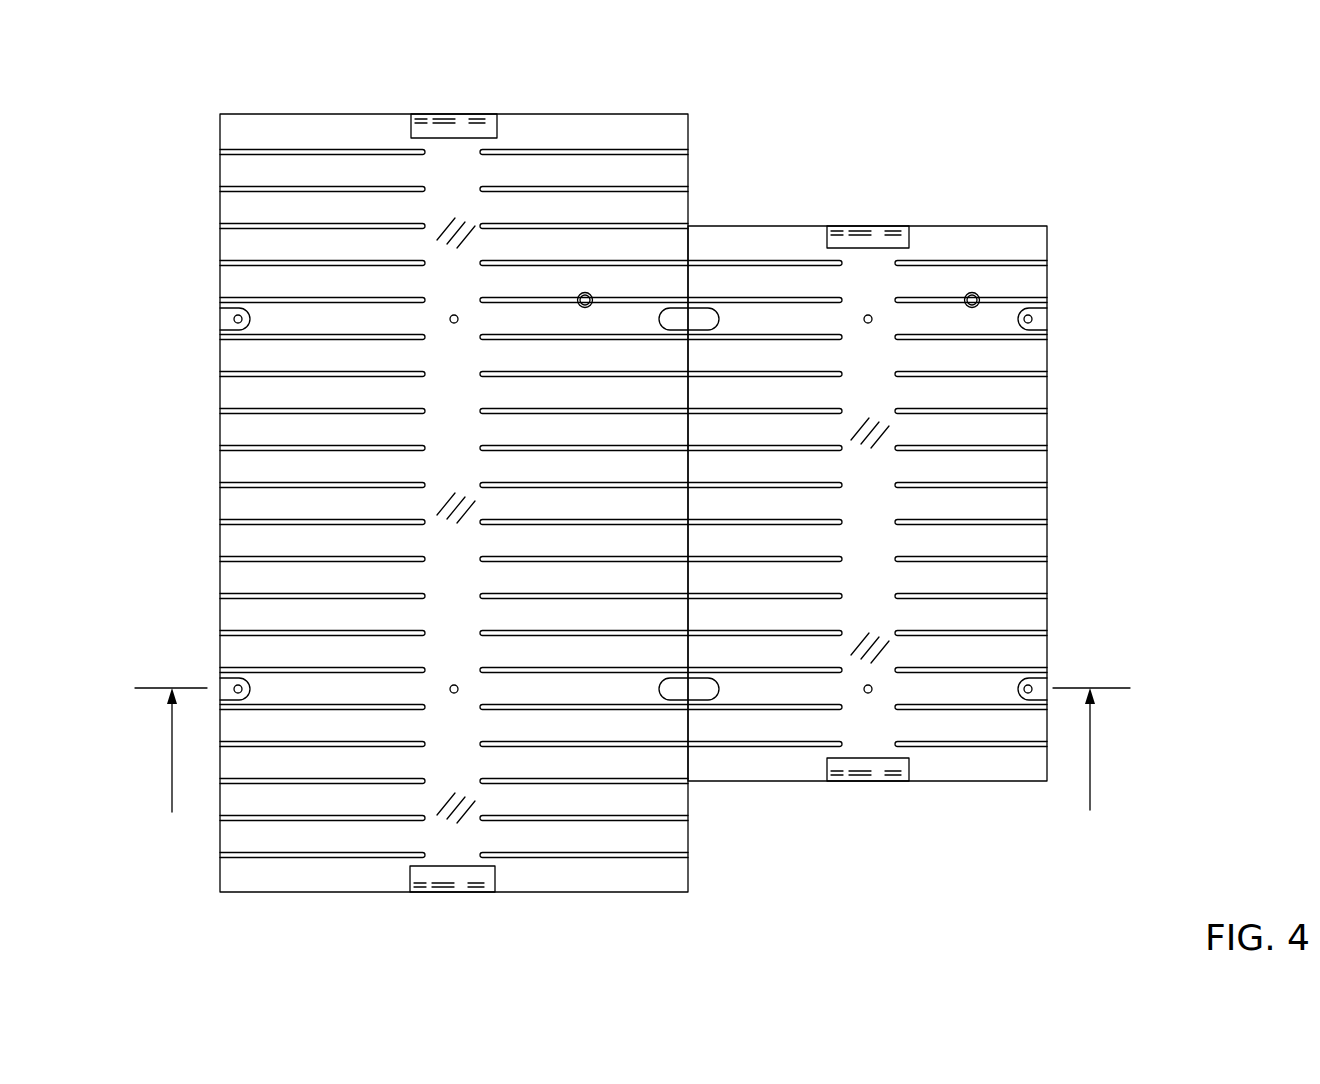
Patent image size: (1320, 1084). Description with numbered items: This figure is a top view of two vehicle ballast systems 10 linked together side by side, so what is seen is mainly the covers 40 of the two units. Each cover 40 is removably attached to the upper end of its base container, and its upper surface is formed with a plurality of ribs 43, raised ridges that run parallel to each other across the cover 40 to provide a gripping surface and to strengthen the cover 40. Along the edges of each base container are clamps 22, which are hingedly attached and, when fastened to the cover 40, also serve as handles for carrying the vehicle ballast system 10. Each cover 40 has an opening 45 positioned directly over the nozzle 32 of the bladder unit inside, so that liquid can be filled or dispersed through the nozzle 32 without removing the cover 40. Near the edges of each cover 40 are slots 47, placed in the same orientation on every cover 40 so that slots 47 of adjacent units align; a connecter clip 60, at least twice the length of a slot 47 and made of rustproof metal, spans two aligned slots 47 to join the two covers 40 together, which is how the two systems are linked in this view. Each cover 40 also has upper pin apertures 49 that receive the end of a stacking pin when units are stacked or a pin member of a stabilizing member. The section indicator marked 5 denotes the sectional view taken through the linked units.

The vehicle ballast system 10 is at (186, 178).
The clamps 22 is at (466, 128).
The nozzle 32 is at (873, 315).
The cover 40 is at (214, 393).
The plurality of ribs 43 is at (255, 520).
The opening 45 is at (978, 308).
The slots 47 is at (1043, 687).
The upper pin aperture 49 is at (451, 685).
The connecter clip 60 is at (705, 308).
The section line for FIG. 5 is at (632, 775).